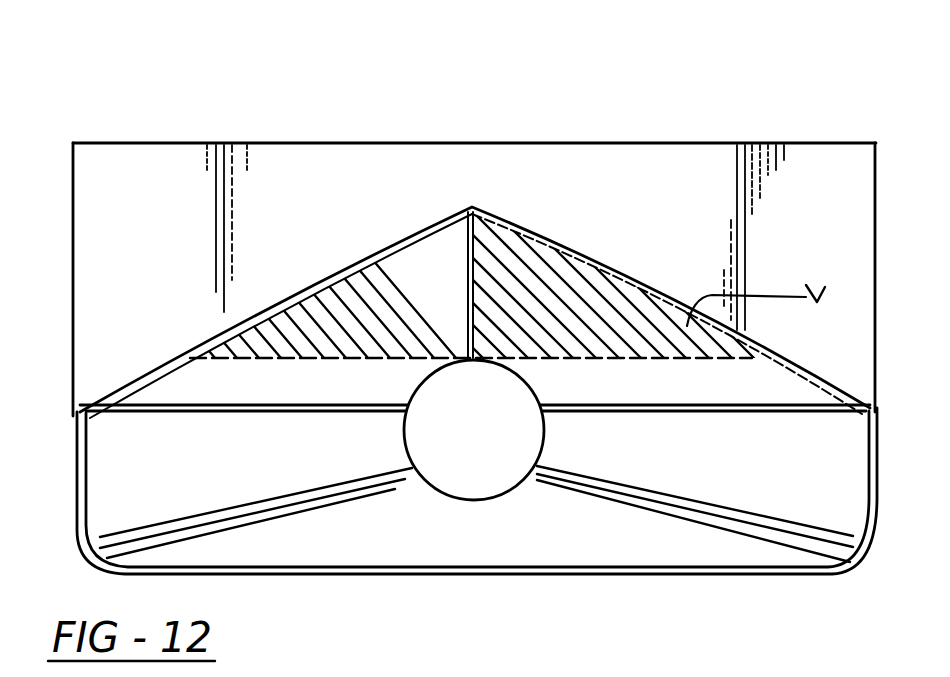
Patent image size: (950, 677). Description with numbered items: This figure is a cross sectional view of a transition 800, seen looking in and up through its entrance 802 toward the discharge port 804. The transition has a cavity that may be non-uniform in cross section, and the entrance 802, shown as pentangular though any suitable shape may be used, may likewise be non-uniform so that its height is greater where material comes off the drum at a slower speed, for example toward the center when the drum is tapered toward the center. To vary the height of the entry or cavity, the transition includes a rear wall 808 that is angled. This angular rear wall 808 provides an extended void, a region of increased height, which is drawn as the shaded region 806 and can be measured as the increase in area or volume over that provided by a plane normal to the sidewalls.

The transition 800 is at (273, 120).
The entrance 802 is at (574, 545).
The discharge port 804 is at (472, 433).
The shaded region 806 is at (520, 265).
The rear wall 808 is at (412, 236).